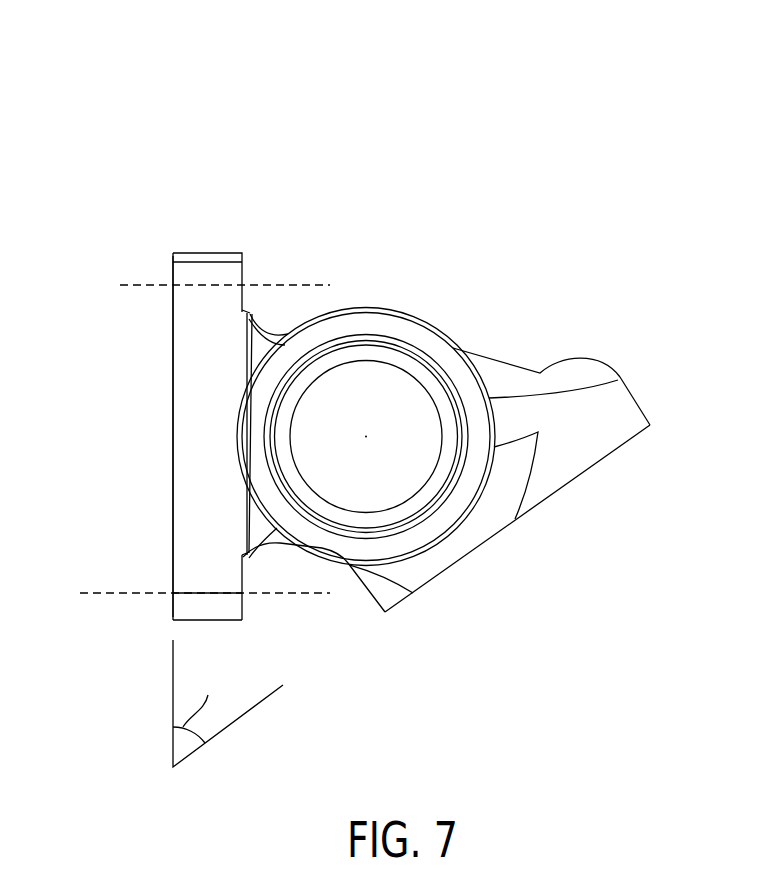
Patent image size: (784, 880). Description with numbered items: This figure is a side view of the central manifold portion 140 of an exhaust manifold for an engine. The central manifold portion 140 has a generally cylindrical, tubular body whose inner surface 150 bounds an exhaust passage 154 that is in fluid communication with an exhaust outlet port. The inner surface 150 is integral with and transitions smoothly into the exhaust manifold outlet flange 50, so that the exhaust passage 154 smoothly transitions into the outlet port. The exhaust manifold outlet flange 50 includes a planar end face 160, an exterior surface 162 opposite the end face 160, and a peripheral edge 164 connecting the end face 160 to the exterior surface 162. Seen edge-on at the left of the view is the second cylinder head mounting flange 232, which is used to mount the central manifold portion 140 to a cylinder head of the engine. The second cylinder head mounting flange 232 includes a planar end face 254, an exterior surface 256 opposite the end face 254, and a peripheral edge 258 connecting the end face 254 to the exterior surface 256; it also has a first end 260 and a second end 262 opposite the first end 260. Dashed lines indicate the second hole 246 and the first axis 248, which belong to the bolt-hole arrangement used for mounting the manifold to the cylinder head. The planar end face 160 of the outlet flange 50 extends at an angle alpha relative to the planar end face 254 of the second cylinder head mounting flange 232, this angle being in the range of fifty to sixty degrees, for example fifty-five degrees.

The exhaust manifold outlet flange 50 is at (665, 318).
The central manifold portion 140 is at (181, 120).
The inner surface 150 is at (342, 468).
The exhaust passage 154 is at (392, 488).
The planar end face 160 is at (628, 442).
The exterior surface 162 is at (570, 357).
The peripheral edge 164 is at (636, 397).
The second cylinder head mounting flange 232 is at (150, 462).
The second hole 246 is at (133, 282).
The first axis 248 is at (110, 596).
The planar end face 254 is at (173, 377).
The exterior surface 256 is at (243, 258).
The peripheral edge 258 is at (212, 283).
The first end 260 is at (176, 220).
The second end 262 is at (222, 632).